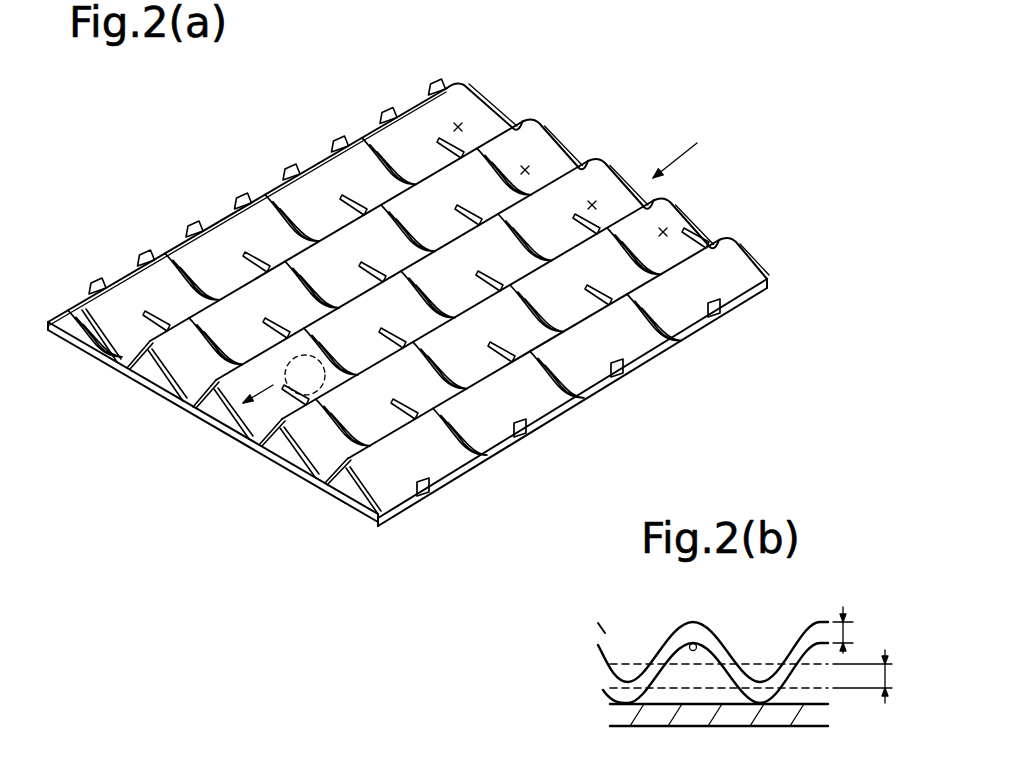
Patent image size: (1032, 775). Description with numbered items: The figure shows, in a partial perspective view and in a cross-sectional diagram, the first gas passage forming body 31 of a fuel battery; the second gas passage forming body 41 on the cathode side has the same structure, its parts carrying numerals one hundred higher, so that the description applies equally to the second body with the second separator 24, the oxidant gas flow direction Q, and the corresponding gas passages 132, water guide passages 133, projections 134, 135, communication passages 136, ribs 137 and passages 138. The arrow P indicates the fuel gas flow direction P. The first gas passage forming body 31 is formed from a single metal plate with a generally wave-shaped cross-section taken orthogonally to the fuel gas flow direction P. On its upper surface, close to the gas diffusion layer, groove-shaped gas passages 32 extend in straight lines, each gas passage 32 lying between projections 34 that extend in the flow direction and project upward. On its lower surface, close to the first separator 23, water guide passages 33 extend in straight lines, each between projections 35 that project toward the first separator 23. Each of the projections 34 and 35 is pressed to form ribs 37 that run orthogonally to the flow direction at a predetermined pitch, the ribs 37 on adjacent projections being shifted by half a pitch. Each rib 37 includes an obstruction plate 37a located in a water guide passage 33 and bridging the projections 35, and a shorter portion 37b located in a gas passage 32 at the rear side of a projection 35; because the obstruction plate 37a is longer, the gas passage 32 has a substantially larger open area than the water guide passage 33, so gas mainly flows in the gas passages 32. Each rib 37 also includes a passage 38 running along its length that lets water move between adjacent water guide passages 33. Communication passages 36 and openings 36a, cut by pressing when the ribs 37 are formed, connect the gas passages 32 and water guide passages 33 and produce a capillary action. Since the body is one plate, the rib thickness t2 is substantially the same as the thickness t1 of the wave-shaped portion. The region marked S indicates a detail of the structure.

In FIG. 2A, the first gas passage forming body 31 is at (356, 178).
In FIG. 2A, the second gas passage forming body 41 is at (619, 55).
In FIG. 2A, the gas passage 32 is at (472, 261).
In FIG. 2B, the gas passage 32 is at (767, 649).
In FIG. 2A, the gas passage 132 is at (460, 125).
In FIG. 2A, the water guide passage 33 is at (189, 439).
In FIG. 2B, the water guide passage 33 is at (703, 700).
In FIG. 2A, the water guide passage 133 is at (82, 333).
In FIG. 2A, the projection 34 is at (353, 292).
In FIG. 2A, the projection 134 is at (80, 300).
In FIG. 2A, the projection 35 is at (209, 434).
In FIG. 2A, the projection 135 is at (105, 370).
In FIG. 2A, the communication passage 36 is at (399, 246).
In FIG. 2A, the communication passage 136 is at (375, 122).
In FIG. 2A, the rib 37 is at (559, 398).
In FIG. 2B, the rib 37 is at (710, 678).
In FIG. 2A, the rib 137 is at (583, 372).
In FIG. 2A, the passage 38 is at (572, 402).
In FIG. 2B, the passage 38 is at (762, 704).
In FIG. 2A, the passage 138 is at (533, 430).
In FIG. 2A, the first separator 23 is at (241, 450).
In FIG. 2A, the second separator 24 is at (414, 507).
In FIG. 2A, the fuel gas flow direction P is at (702, 158).
In FIG. 2A, the oxidant gas flow direction Q is at (702, 158).
In FIG. 2A, the flow direction / section region S is at (287, 377).
In FIG. 2B, the opening 36a is at (692, 643).
In FIG. 2B, the obstruction plate 37a is at (680, 678).
In FIG. 2B, the portion 37b is at (633, 670).
In FIG. 2B, the thickness of the wave-shaped portion t1 is at (855, 630).
In FIG. 2B, the thickness of the rib t2 is at (878, 676).